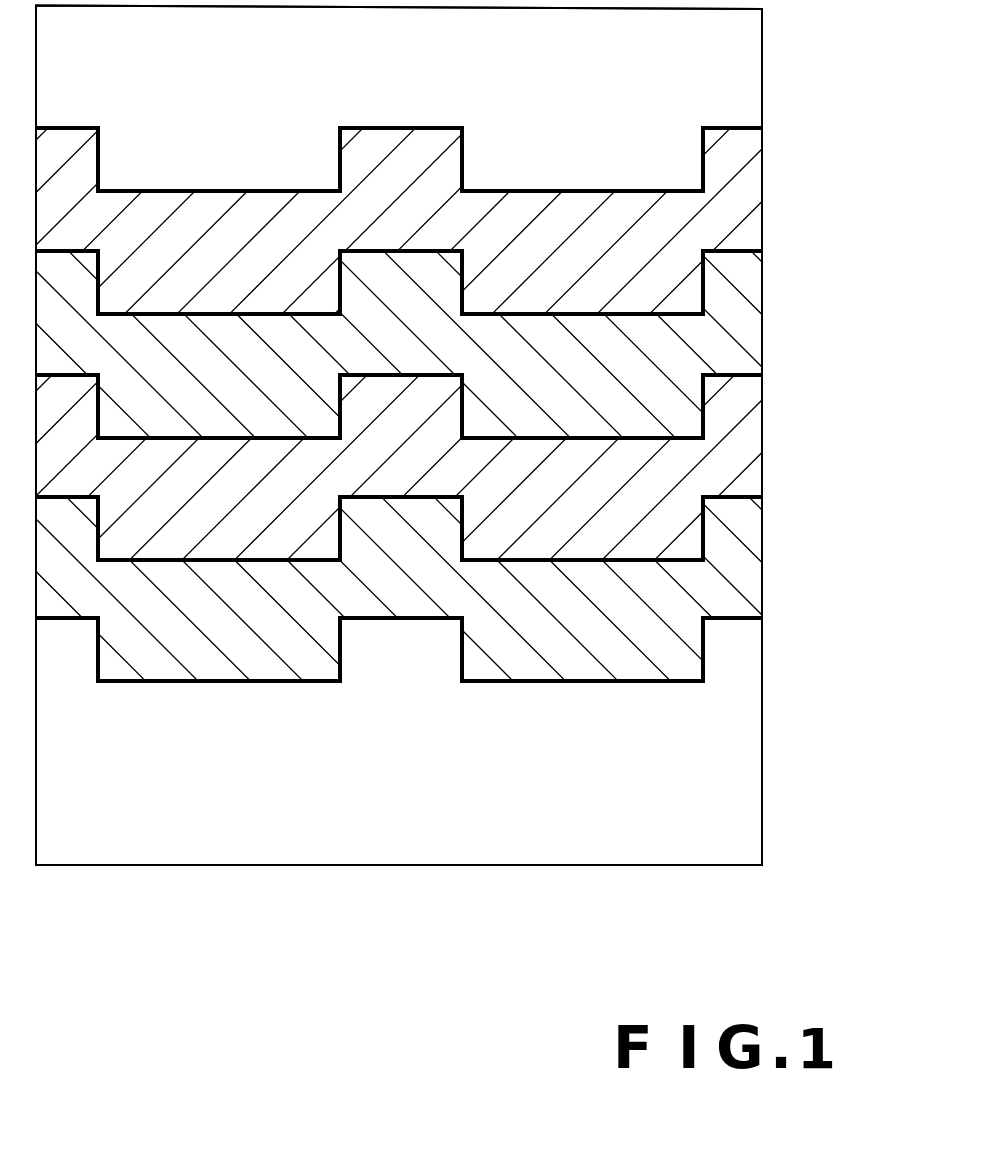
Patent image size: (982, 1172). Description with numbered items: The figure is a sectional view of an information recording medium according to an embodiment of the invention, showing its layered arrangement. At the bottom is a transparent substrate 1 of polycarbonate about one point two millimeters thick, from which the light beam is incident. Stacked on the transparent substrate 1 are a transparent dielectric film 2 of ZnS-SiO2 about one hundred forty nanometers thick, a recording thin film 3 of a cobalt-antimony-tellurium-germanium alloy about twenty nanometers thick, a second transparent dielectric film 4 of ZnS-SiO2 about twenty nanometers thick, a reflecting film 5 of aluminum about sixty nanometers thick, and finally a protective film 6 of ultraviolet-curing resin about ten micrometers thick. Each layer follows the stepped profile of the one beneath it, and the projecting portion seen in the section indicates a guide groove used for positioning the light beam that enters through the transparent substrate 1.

The transparent substrate 1 is at (730, 715).
The transparent dielectric film 2 is at (740, 563).
The recording thin film 3 is at (740, 437).
The transparent dielectric film 4 is at (740, 327).
The reflecting film 5 is at (737, 203).
The protective film 6 is at (737, 78).